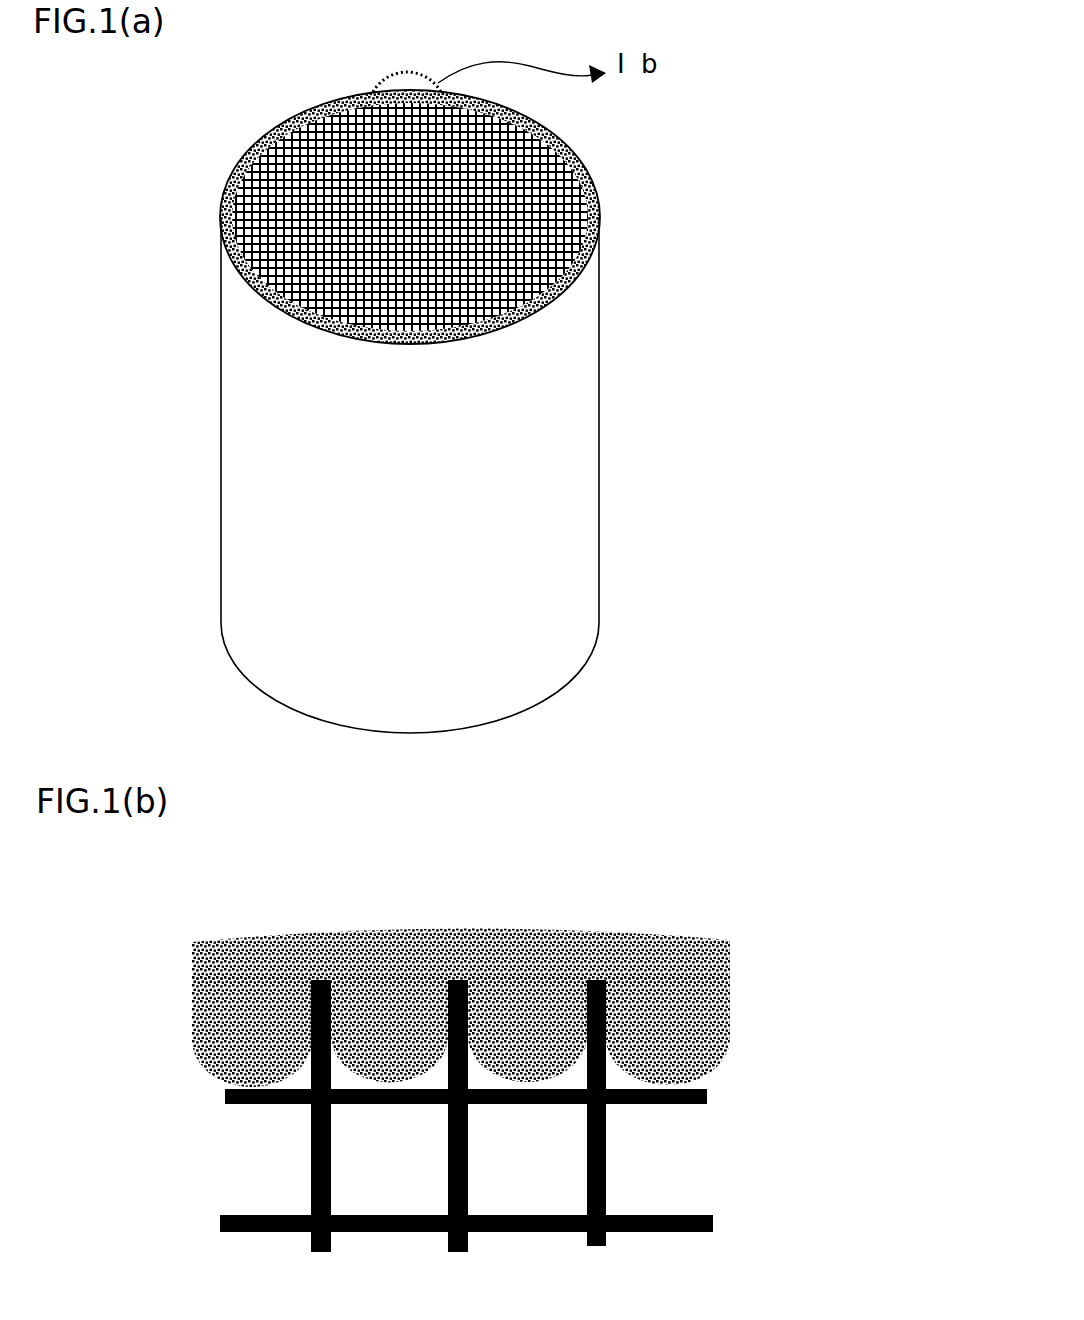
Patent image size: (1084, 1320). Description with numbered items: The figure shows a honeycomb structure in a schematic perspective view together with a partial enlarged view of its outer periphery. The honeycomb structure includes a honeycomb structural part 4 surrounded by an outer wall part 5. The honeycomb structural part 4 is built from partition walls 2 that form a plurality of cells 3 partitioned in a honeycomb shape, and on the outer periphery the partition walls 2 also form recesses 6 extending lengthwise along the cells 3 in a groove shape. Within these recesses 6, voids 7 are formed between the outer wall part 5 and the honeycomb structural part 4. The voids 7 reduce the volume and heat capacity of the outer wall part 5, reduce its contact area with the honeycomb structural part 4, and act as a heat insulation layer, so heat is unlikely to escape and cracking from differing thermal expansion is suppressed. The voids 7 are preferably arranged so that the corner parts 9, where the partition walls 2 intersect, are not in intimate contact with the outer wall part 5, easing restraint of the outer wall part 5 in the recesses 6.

In FIG. 1B, the partition walls 2 is at (605, 1168).
In FIG. 1B, the cells 3 is at (548, 1137).
In FIG. 1A, the honeycomb structural part 4 is at (503, 167).
In FIG. 1A, the outer wall part 5 is at (587, 388).
In FIG. 1B, the outer wall part 5 is at (640, 937).
In FIG. 1B, the recesses 6 is at (527, 1013).
In FIG. 1B, the voids 7 is at (572, 1073).
In FIG. 1B, the corner parts 9 is at (311, 1088).